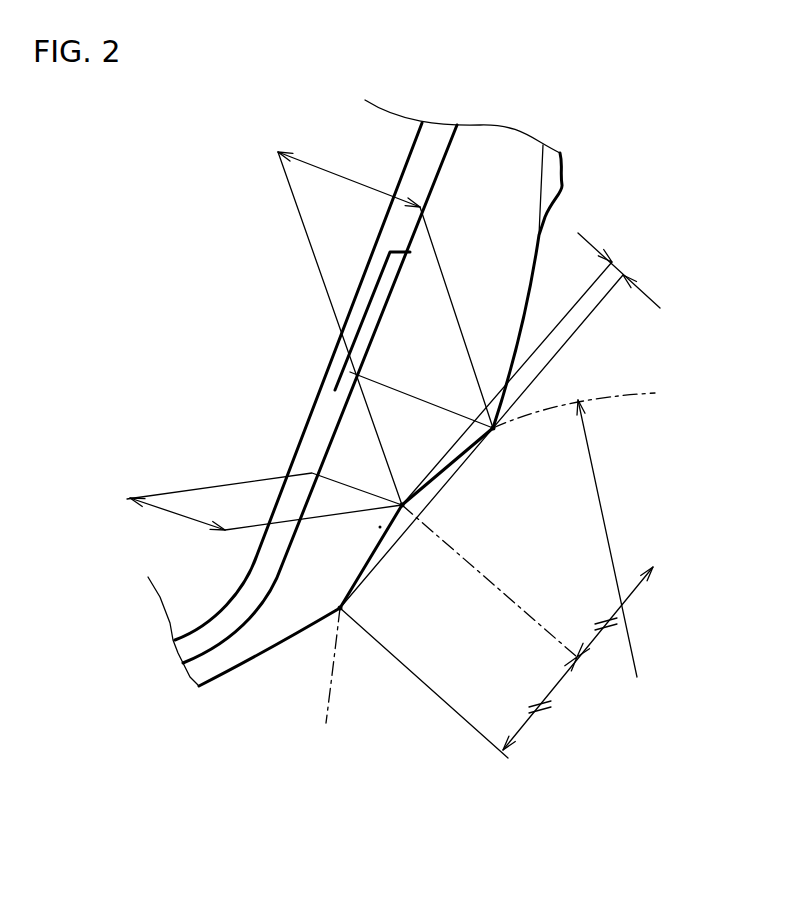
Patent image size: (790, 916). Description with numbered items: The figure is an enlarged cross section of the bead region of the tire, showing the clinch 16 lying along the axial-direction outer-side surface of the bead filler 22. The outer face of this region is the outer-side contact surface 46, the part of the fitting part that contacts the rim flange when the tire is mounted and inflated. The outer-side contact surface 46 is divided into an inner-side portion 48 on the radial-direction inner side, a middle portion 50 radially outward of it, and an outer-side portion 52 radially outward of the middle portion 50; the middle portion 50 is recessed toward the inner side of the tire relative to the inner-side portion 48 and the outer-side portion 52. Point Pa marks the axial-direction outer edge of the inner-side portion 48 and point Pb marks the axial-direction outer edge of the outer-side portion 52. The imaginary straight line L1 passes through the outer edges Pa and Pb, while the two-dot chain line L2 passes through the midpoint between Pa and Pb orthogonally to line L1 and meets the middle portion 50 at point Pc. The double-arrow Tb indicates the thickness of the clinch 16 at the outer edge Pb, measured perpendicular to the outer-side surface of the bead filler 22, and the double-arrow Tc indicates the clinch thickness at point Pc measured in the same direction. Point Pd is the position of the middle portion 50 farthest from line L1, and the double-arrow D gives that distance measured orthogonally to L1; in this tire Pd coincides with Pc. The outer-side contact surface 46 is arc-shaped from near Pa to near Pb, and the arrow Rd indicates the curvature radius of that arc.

The clinch 16 is at (512, 215).
The bead filler 22 is at (318, 418).
The outer-side contact surface 46 is at (416, 518).
The inner-side portion 48 is at (340, 608).
The middle portion 50 is at (378, 544).
The outer-side portion 52 is at (493, 428).
The thickness of the clinch at the outer edge Pb Tb is at (350, 178).
The thickness of the clinch at the point Pc Tc is at (264, 509).
The distance between the imaginary straight line L1 and the point Pd D is at (531, 369).
The imaginary straight line L1 is at (575, 333).
The imaginary straight line L2 is at (510, 589).
The curvature radius of the arc Rd is at (593, 490).
The axial-direction outer edge of the inner-side portion Pa is at (345, 608).
The axial-direction outer edge of the outer-side portion Pb is at (495, 433).
The intersection point of the imaginary straight line L2 and the middle portion Pc is at (401, 502).
The position most away from the imaginary straight line L1 in the middle portion Pd is at (380, 527).